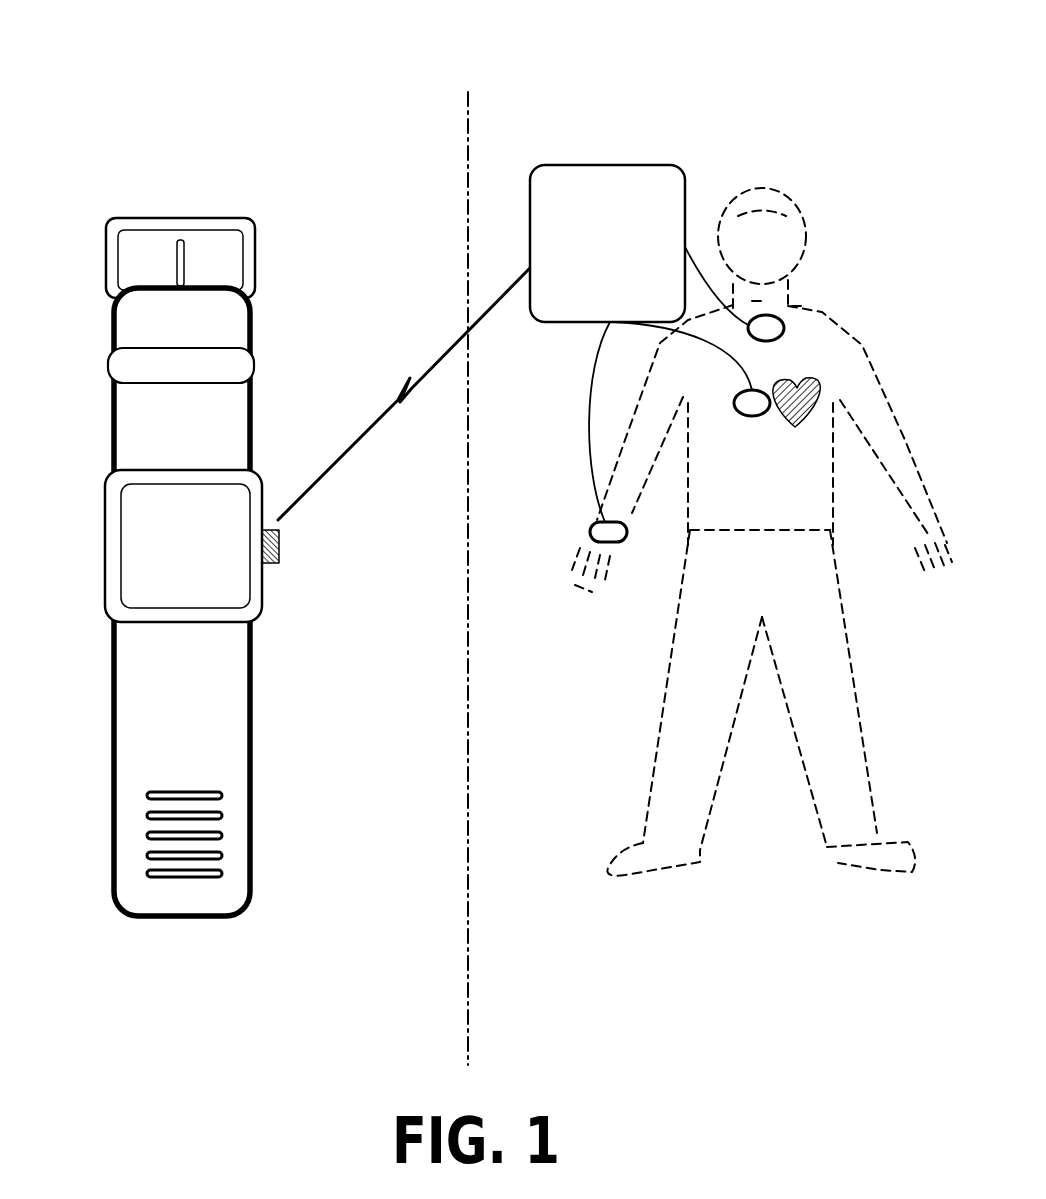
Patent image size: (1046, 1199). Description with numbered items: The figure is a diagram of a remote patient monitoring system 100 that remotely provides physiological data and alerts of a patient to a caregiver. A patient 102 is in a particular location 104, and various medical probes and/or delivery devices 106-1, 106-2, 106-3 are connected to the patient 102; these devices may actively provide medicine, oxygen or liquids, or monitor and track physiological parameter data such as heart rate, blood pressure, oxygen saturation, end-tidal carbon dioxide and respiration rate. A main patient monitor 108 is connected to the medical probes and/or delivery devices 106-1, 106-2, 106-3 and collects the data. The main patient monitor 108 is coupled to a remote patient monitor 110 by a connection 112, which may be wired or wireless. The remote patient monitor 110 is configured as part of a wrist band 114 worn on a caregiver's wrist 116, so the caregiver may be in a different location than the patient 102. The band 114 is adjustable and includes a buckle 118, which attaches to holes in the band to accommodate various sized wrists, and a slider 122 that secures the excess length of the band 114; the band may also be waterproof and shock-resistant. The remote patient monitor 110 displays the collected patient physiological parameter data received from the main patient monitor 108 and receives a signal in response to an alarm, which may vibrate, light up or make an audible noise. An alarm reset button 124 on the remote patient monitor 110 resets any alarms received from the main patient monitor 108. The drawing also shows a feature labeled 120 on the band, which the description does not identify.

The remote patient monitoring system 100 is at (490, 69).
The patient 102 is at (717, 532).
The location 104 is at (717, 585).
The medical probe and/or delivery device 106-1 is at (592, 522).
The medical probe and/or delivery device 106-2 is at (752, 416).
The medical probe and/or delivery device 106-3 is at (770, 341).
The main patient monitor 108 is at (589, 296).
The remote patient monitor 110 is at (206, 603).
The connection 112 is at (447, 352).
The wrist band 114 is at (162, 440).
The caregiver's wrist 116 is at (250, 589).
The buckle 118 is at (185, 218).
The vents 120 is at (226, 793).
The slider 122 is at (258, 372).
The alarm reset button 124 is at (268, 565).